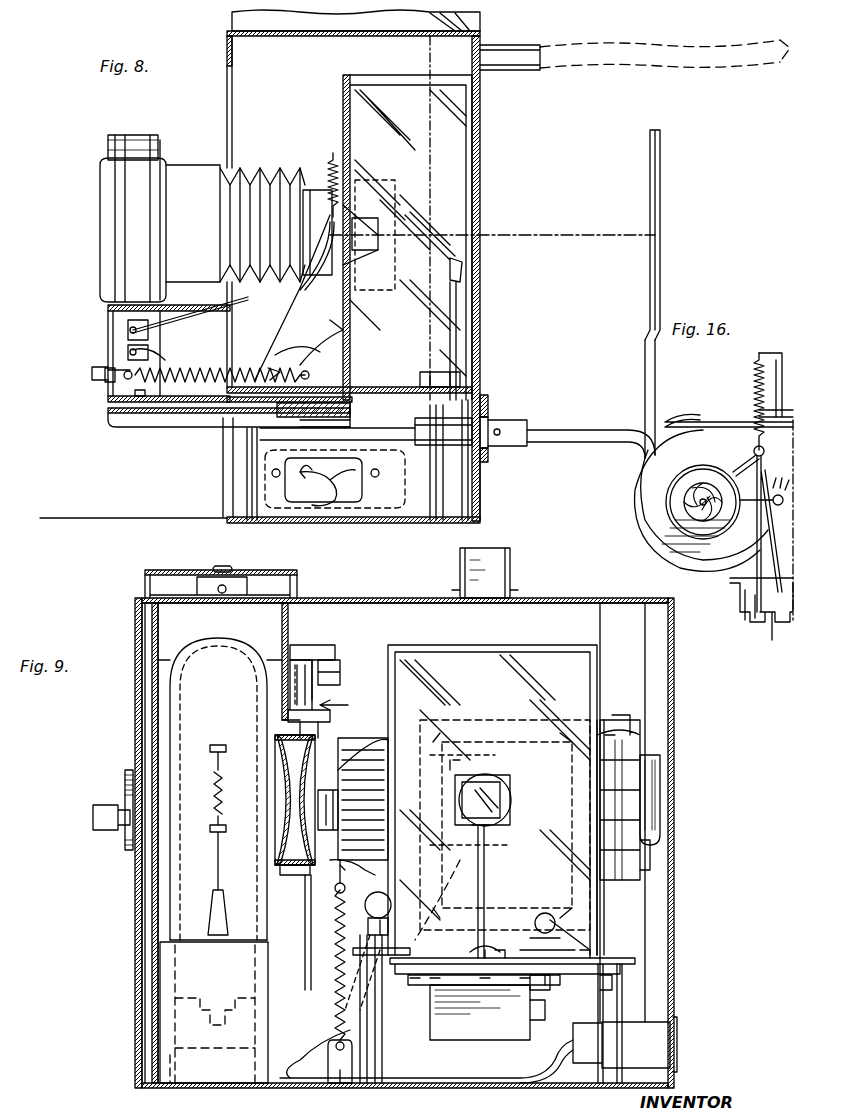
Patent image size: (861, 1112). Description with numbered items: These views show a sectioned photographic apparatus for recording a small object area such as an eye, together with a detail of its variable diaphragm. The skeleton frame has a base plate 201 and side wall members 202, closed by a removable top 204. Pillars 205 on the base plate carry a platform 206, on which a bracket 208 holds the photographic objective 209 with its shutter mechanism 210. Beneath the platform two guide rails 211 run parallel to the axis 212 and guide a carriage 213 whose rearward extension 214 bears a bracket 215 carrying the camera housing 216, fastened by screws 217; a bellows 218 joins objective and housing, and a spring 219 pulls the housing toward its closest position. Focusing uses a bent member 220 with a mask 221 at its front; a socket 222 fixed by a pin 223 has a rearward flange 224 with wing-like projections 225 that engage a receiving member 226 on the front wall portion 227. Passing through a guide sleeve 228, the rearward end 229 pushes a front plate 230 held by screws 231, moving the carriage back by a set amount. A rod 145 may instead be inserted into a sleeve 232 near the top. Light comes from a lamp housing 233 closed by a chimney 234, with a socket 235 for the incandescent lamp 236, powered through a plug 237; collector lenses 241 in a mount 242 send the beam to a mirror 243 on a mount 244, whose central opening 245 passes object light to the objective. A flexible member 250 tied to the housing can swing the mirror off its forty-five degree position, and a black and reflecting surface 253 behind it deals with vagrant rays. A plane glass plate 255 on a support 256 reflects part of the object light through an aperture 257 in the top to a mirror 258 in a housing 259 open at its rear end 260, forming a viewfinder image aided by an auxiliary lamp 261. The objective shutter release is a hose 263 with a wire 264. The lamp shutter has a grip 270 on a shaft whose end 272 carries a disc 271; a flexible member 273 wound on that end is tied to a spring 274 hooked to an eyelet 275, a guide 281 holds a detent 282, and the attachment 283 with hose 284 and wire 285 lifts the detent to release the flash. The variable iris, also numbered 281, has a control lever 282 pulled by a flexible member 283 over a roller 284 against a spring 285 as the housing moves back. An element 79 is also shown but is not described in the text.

In FIG. 9, the bracket 79 is at (338, 650).
In FIG. 8, the rod 145 is at (605, 52).
In FIG. 8, the base plate 201 is at (398, 524).
In FIG. 9, the base plate 201 is at (468, 1088).
In FIG. 9, the side wall members 202 is at (668, 661).
In FIG. 8, the removable top 204 is at (476, 40).
In FIG. 9, the removable top 204 is at (620, 601).
In FIG. 8, the pillars 205 is at (436, 512).
In FIG. 9, the pillars 205 is at (379, 1079).
In FIG. 8, the platform 206 is at (465, 372).
In FIG. 9, the platform 206 is at (576, 967).
In FIG. 8, the bracket 208 is at (300, 316).
In FIG. 16, the bracket 208 is at (716, 422).
In FIG. 8, the photographic objective 209 is at (317, 195).
In FIG. 8, the shutter mechanism 210 is at (352, 208).
In FIG. 16, the shutter mechanism 210 is at (680, 500).
In FIG. 8, the guide rails 211 is at (413, 444).
In FIG. 9, the guide rails 211 is at (408, 989).
In FIG. 8, the axis 212 is at (558, 235).
In FIG. 8, the carriage 213 is at (290, 420).
In FIG. 9, the carriage 213 is at (538, 991).
In FIG. 8, the rearward extension 214 is at (170, 428).
In FIG. 8, the bracket 215 is at (110, 397).
In FIG. 8, the camera housing 216 is at (106, 190).
In FIG. 9, the camera housing 216 is at (615, 740).
In FIG. 8, the screws 217 is at (150, 331).
In FIG. 8, the bellows 218 is at (263, 182).
In FIG. 8, the spring 219 is at (177, 385).
In FIG. 8, the bent member 220 is at (580, 444).
In FIG. 8, the mask 221 is at (662, 188).
In FIG. 8, the socket 222 is at (528, 425).
In FIG. 8, the pin 223 is at (500, 437).
In FIG. 8, the rearward flange 224 is at (487, 432).
In FIG. 8, the wing-like projections 225 is at (488, 410).
In FIG. 8, the receiving member 226 is at (485, 462).
In FIG. 8, the front wall portion 227 is at (481, 503).
In FIG. 8, the guide sleeve 228 is at (443, 431).
In FIG. 8, the rearward end 229 is at (378, 441).
In FIG. 8, the front plate 230 is at (366, 494).
In FIG. 9, the front plate 230 is at (443, 1021).
In FIG. 8, the screws 231 is at (335, 429).
In FIG. 8, the sleeve 232 is at (520, 52).
In FIG. 9, the lamp housing 233 is at (140, 719).
In FIG. 9, the chimney 234 is at (291, 615).
In FIG. 9, the socket 235 is at (146, 589).
In FIG. 9, the incandescent lamp 236 is at (218, 789).
In FIG. 8, the plug 237 is at (350, 512).
In FIG. 9, the plug 237 is at (660, 1033).
In FIG. 9, the collector lenses 241 is at (318, 738).
In FIG. 9, the mount 242 is at (294, 877).
In FIG. 8, the mirror 243 is at (460, 148).
In FIG. 9, the mirror 243 is at (590, 676).
In FIG. 8, the mirror mount 244 is at (403, 385).
In FIG. 9, the mirror mount 244 is at (597, 946).
In FIG. 8, the central opening 245 is at (375, 228).
In FIG. 9, the central opening 245 is at (488, 775).
In FIG. 8, the flexible member 250 is at (163, 368).
In FIG. 8, the black and reflecting surface 253 is at (371, 288).
In FIG. 9, the black and reflecting surface 253 is at (660, 846).
In FIG. 8, the plane glass plate 255 is at (435, 250).
In FIG. 9, the plane glass plate 255 is at (458, 775).
In FIG. 8, the support 256 is at (450, 312).
In FIG. 9, the support 256 is at (487, 911).
In FIG. 8, the aperture 257 is at (415, 42).
In FIG. 8, the mirror 258 is at (428, 20).
In FIG. 9, the mirror 258 is at (512, 571).
In FIG. 8, the housing 259 is at (323, 32).
In FIG. 8, the opening 260 is at (228, 24).
In FIG. 9, the auxiliary lamp 261 is at (330, 707).
In FIG. 8, the hose 263 is at (345, 332).
In FIG. 9, the hose 263 is at (335, 1036).
In FIG. 8, the wire 264 is at (272, 353).
In FIG. 9, the grip 270 is at (102, 801).
In FIG. 9, the disc 271 is at (311, 919).
In FIG. 9, the end 272 is at (355, 815).
In FIG. 9, the flexible member 273 is at (348, 869).
In FIG. 9, the spring 274 is at (335, 1013).
In FIG. 9, the eyelet 275 is at (340, 1086).
In FIG. 16, the variable iris 281 is at (690, 514).
In FIG. 9, the variable iris 281 is at (300, 662).
In FIG. 16, the control lever 282 is at (743, 460).
In FIG. 9, the control lever 282 is at (338, 676).
In FIG. 8, the flexible member 283 is at (212, 311).
In FIG. 16, the flexible member 283 is at (757, 565).
In FIG. 8, the roller 284 is at (300, 291).
In FIG. 16, the roller 284 is at (773, 627).
In FIG. 8, the spring 285 is at (333, 158).
In FIG. 16, the spring 285 is at (752, 376).